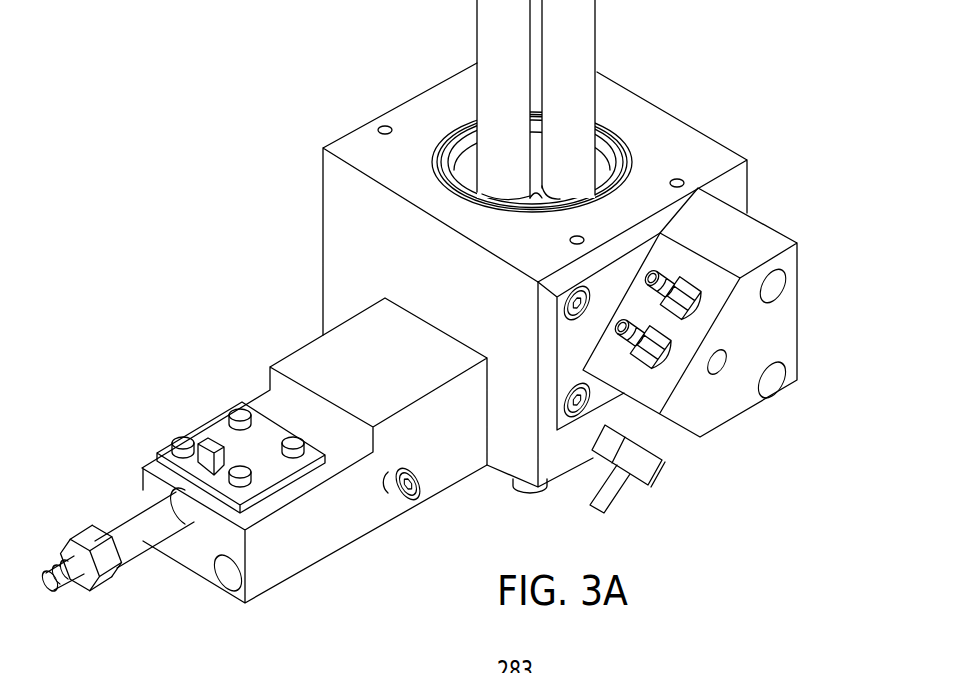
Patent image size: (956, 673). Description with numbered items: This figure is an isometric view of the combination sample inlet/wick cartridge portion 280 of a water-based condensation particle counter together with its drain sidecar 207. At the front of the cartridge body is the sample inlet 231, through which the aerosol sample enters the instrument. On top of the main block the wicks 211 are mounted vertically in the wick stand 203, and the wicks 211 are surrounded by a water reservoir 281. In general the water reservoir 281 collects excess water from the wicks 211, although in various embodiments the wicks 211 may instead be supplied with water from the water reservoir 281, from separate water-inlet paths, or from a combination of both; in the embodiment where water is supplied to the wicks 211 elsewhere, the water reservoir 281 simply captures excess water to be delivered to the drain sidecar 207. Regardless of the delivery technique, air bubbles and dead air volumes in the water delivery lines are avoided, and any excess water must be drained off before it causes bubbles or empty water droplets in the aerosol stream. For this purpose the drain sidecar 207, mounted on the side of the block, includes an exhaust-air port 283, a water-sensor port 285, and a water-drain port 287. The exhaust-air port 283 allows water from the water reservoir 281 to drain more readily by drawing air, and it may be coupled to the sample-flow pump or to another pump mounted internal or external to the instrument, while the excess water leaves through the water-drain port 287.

The combination sample inlet/wick cartridge portion 280 is at (103, 57).
The wick stand 203 is at (462, 112).
The wicks 211 is at (517, 45).
The water reservoir 281 is at (542, 187).
The exhaust-air port 283 is at (652, 268).
The water-sensor port 285 is at (641, 366).
The drain sidecar 207 is at (770, 240).
The water-drain port 287 is at (608, 505).
The sample inlet 231 is at (57, 595).